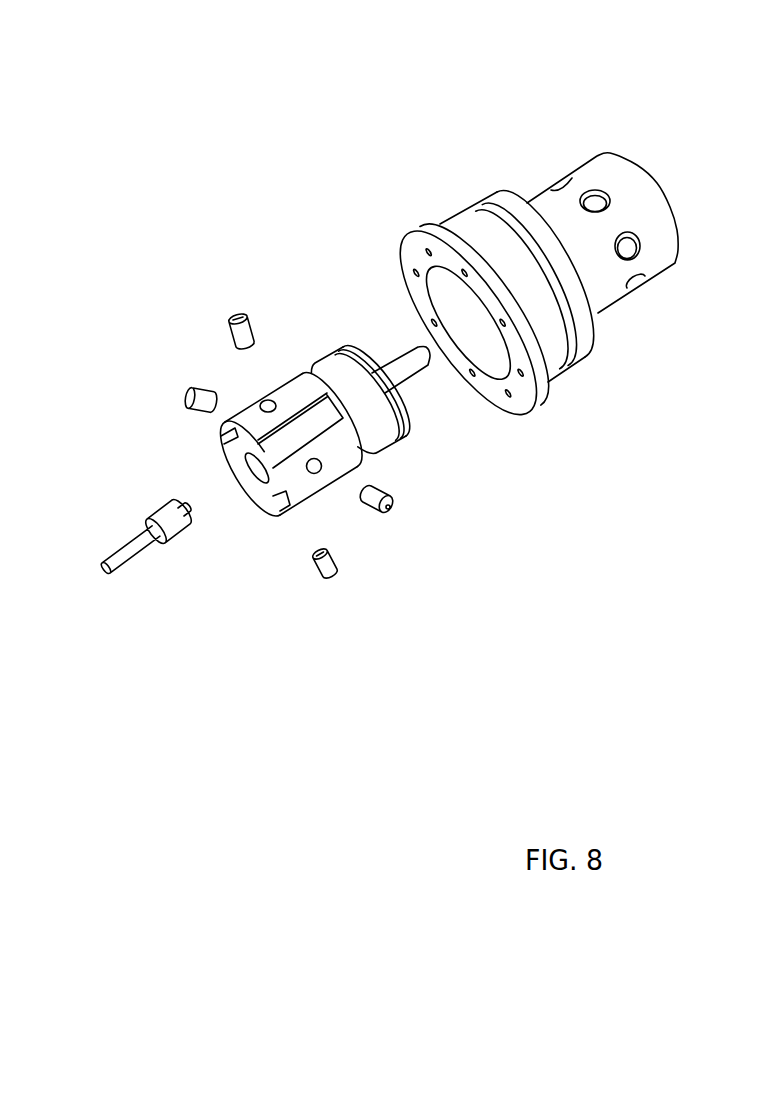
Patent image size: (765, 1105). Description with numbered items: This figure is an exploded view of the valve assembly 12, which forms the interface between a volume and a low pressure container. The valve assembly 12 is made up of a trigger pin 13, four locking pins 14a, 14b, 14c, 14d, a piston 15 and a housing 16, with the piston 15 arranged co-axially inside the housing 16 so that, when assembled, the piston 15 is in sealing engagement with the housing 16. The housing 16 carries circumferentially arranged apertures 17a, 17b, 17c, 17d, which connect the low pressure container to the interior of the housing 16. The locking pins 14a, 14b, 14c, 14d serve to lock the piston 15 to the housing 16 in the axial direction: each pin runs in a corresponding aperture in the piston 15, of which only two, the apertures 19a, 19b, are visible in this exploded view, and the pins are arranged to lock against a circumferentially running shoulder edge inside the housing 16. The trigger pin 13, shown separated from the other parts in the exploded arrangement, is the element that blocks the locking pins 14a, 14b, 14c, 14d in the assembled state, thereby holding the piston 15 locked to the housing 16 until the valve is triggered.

The valve assembly 12 is at (152, 183).
The trigger pin 13 is at (157, 533).
The locking pin 14a is at (237, 318).
The locking pin 14b is at (387, 493).
The locking pin 14c is at (340, 567).
The locking pin 14d is at (183, 393).
The piston 15 is at (290, 395).
The housing 16 is at (543, 208).
The aperture 17a is at (563, 178).
The aperture 17b is at (593, 203).
The aperture 17c is at (626, 246).
The aperture 17d is at (637, 283).
The aperture 19a is at (265, 407).
The aperture 19b is at (315, 467).